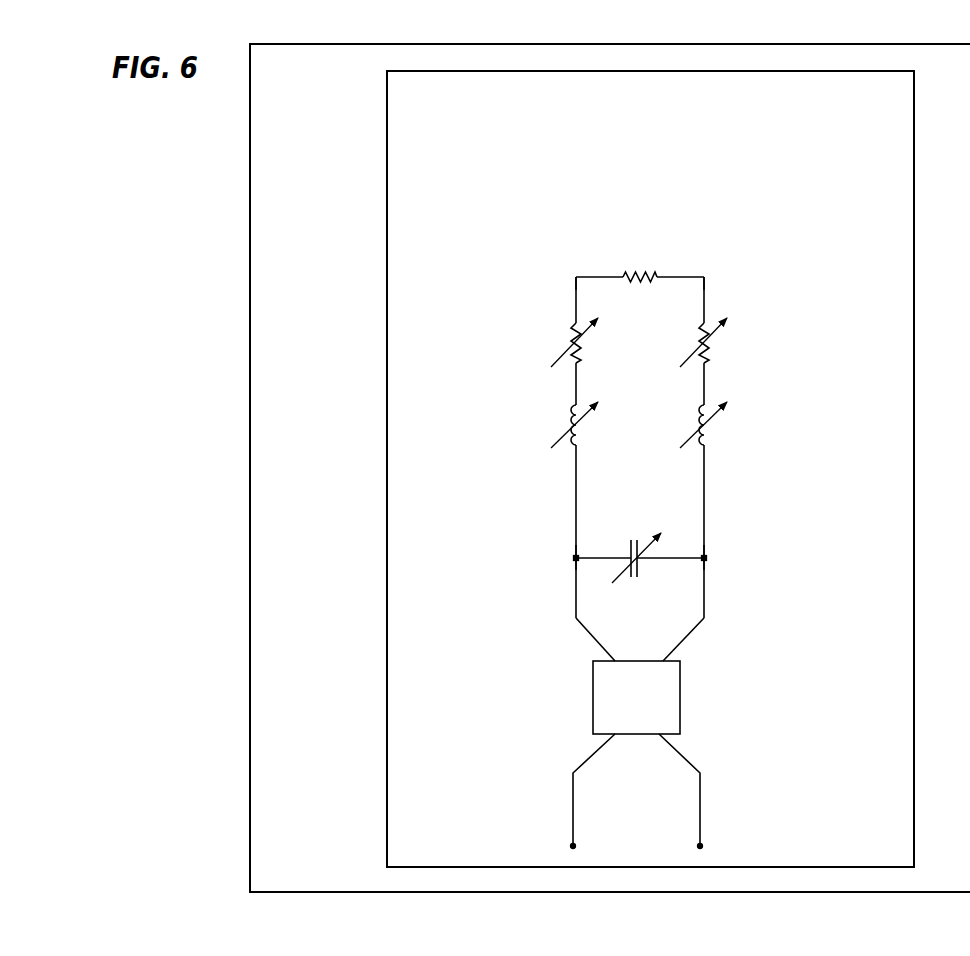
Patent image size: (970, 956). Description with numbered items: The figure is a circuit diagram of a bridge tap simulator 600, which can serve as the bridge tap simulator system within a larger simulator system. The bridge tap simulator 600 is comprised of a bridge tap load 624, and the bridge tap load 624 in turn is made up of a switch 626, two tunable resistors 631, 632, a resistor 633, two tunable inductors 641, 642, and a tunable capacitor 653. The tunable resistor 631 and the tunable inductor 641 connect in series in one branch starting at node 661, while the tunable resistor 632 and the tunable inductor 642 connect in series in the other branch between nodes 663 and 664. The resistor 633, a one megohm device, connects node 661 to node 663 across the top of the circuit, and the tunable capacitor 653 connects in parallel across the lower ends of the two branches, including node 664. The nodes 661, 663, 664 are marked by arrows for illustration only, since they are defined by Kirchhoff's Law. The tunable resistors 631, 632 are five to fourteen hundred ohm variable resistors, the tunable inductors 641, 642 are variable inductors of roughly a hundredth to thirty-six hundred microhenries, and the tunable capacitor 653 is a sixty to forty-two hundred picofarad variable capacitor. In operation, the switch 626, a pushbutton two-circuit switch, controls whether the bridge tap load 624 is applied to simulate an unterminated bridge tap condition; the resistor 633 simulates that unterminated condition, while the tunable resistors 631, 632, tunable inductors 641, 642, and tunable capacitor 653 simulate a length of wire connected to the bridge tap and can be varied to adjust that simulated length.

The bridge tap simulator 600 is at (331, 859).
The bridge tap load 624 is at (867, 836).
The switch 626 is at (656, 722).
The tunable resistor 631 is at (710, 343).
The tunable resistor 632 is at (582, 343).
The resistor 633 is at (647, 272).
The tunable inductor 641 is at (706, 430).
The tunable inductor 642 is at (577, 430).
The tunable capacitor 653 is at (640, 567).
The node 661 is at (718, 270).
The node 663 is at (572, 273).
The node 664 is at (570, 559).